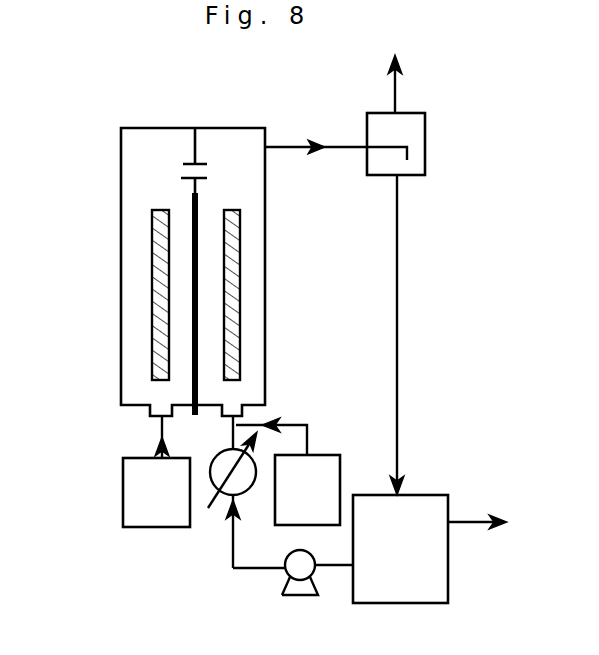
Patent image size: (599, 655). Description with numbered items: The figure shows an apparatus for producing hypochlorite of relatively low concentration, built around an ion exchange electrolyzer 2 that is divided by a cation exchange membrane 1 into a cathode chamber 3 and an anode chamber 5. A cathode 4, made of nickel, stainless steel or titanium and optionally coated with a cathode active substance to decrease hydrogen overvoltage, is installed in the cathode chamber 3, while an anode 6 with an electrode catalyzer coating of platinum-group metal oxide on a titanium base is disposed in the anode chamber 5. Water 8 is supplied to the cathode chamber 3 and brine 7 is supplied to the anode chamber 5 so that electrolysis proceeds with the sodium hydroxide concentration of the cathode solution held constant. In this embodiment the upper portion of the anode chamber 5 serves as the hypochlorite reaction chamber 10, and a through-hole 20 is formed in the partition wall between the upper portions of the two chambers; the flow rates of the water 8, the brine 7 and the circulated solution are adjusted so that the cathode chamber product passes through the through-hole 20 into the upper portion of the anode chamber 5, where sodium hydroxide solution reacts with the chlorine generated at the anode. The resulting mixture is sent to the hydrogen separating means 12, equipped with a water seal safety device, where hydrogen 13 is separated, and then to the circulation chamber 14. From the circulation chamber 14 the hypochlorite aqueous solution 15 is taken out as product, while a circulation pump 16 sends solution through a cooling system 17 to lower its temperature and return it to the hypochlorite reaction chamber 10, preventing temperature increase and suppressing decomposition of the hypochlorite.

The cation exchange membrane 1 is at (185, 372).
The ion exchange electrolyzer 2 is at (108, 213).
The cathode chamber 3 is at (130, 235).
The cathode 4 is at (148, 317).
The anode chamber 5 is at (253, 273).
The anode 6 is at (240, 370).
The brine 7 is at (288, 471).
The water 8 is at (156, 471).
The hypochlorite reaction chamber 10 is at (220, 148).
The hydrogen separating means 12 is at (380, 133).
The hydrogen 13 is at (407, 92).
The circulation chamber 14 is at (400, 549).
The hypochlorite aqueous solution 15 is at (495, 528).
The circulation pump 16 is at (300, 592).
The cooling system 17 is at (225, 497).
The through-hole 20 is at (182, 167).